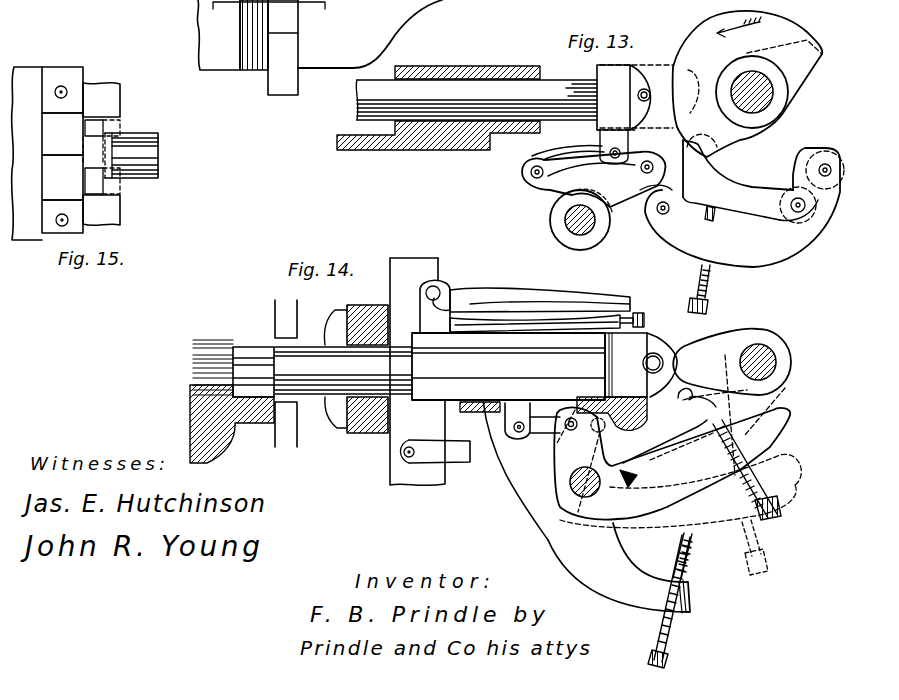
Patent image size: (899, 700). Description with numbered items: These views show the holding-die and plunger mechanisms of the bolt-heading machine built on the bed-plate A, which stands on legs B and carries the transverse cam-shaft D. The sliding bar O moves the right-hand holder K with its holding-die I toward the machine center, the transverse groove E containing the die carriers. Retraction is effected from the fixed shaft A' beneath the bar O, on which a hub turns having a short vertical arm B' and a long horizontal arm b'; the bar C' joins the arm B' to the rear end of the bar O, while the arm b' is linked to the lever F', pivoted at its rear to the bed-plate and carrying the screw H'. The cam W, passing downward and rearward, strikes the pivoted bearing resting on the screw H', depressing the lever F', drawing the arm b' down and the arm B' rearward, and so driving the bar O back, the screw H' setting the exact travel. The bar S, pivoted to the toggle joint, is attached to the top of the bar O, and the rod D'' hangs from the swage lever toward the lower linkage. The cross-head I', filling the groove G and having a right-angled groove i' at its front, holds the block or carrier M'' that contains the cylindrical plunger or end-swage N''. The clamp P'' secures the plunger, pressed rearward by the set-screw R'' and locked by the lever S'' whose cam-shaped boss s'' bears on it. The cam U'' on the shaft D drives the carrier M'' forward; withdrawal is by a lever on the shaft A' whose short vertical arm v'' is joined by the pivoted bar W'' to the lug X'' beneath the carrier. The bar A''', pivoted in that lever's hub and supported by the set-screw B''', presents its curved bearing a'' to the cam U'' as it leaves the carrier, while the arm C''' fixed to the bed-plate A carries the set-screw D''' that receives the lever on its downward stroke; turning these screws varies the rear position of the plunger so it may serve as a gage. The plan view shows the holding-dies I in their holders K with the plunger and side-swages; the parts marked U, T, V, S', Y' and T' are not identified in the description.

In FIG. 15, the bed-plate A is at (26, 153).
In FIG. 13, the bed-plate A is at (438, 110).
In FIG. 14, the bed-plate A is at (232, 424).
In FIG. 15, the holder K is at (62, 150).
In FIG. 13, the holder K is at (283, 47).
In FIG. 15, the holding-die I is at (62, 156).
In FIG. 14, the holding-die I is at (253, 364).
In FIG. 15, the guide piece U is at (101, 154).
In FIG. 15, the tongue T is at (101, 157).
In FIG. 15, the cam U'' is at (141, 155).
In FIG. 14, the cam U'' is at (732, 402).
In FIG. 13, the leg B is at (254, 37).
In FIG. 13, the sliding bar O is at (476, 99).
In FIG. 13, the shaft D is at (616, 147).
In FIG. 13, the cam / lever V is at (747, 84).
In FIG. 14, the cam / lever V is at (672, 463).
In FIG. 13, the cam W is at (761, 87).
In FIG. 13, the short vertical arm B' is at (593, 179).
In FIG. 13, the bar C' is at (568, 155).
In FIG. 13, the shaft A' is at (560, 220).
In FIG. 14, the shaft A' is at (526, 470).
In FIG. 13, the long horizontal arm b' is at (600, 200).
In FIG. 13, the groove E is at (657, 192).
In FIG. 13, the groove G is at (749, 181).
In FIG. 13, the lever F' is at (744, 207).
In FIG. 13, the screw H' is at (706, 289).
In FIG. 13, the rod D'' is at (655, 313).
In FIG. 14, the plunger or end-swage N'' is at (302, 367).
In FIG. 14, the cross-head I' is at (367, 369).
In FIG. 14, the vertical right-angled groove i' is at (335, 369).
In FIG. 14, the bar S is at (417, 378).
In FIG. 14, the plate edge S' is at (423, 261).
In FIG. 14, the lever Y' is at (435, 446).
In FIG. 14, the bracket T' is at (434, 306).
In FIG. 14, the cam-shaped boss s'' is at (445, 306).
In FIG. 14, the lever S'' is at (540, 297).
In FIG. 14, the clamp P'' is at (535, 323).
In FIG. 14, the set-screw R'' is at (641, 323).
In FIG. 14, the block or carrier M'' is at (544, 366).
In FIG. 14, the lug X'' is at (553, 413).
In FIG. 14, the pivoted bar W'' is at (522, 431).
In FIG. 14, the short vertical arm v'' is at (567, 436).
In FIG. 14, the arm C''' is at (619, 568).
In FIG. 14, the set-screw D''' is at (673, 601).
In FIG. 14, the curved bearing a'' is at (696, 397).
In FIG. 14, the bar A''' is at (668, 441).
In FIG. 14, the set-screw B''' is at (680, 484).